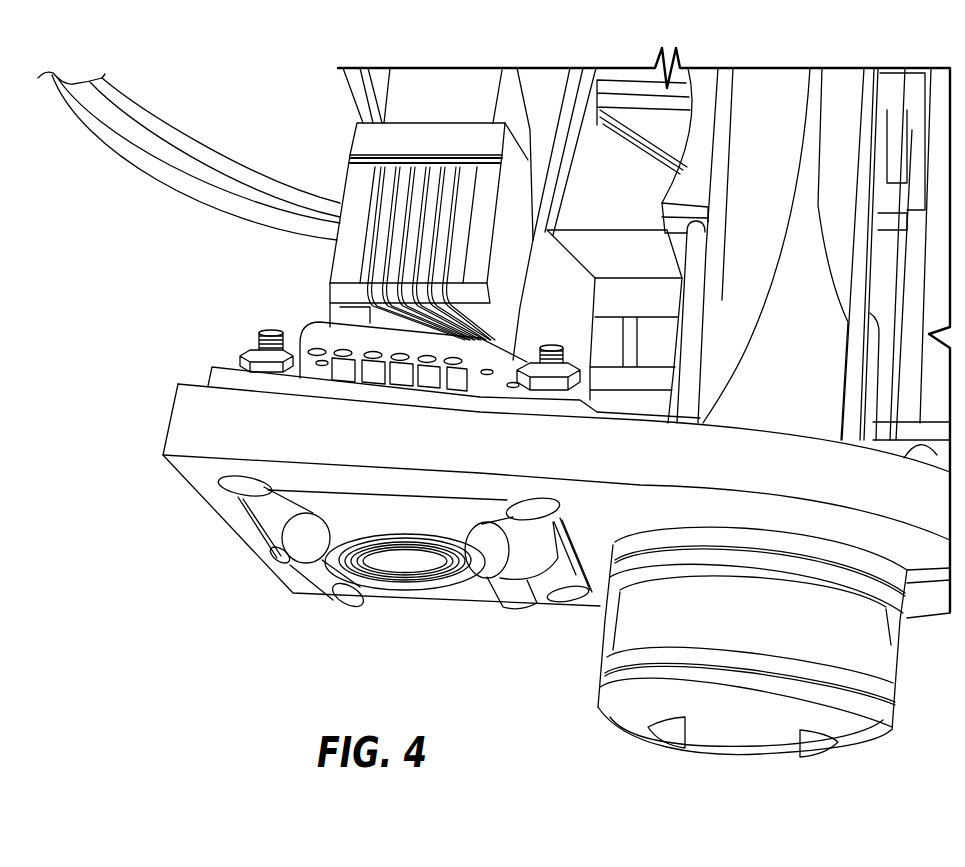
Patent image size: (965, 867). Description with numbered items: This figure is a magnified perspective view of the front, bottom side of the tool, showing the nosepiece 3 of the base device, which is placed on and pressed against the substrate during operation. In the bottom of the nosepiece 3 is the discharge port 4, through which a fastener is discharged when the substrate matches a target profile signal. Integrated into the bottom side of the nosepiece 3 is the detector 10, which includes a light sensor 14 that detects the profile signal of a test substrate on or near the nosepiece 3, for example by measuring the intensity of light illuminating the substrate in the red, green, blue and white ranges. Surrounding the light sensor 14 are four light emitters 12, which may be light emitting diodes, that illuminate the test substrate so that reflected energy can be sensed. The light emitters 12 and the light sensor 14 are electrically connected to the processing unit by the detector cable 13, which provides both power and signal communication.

The nosepiece 3 is at (192, 420).
The discharge port 4 is at (733, 736).
The detector 10 is at (311, 306).
The light emitters 12 is at (293, 593).
The detector cable 13 is at (410, 100).
The light sensor 14 is at (421, 568).